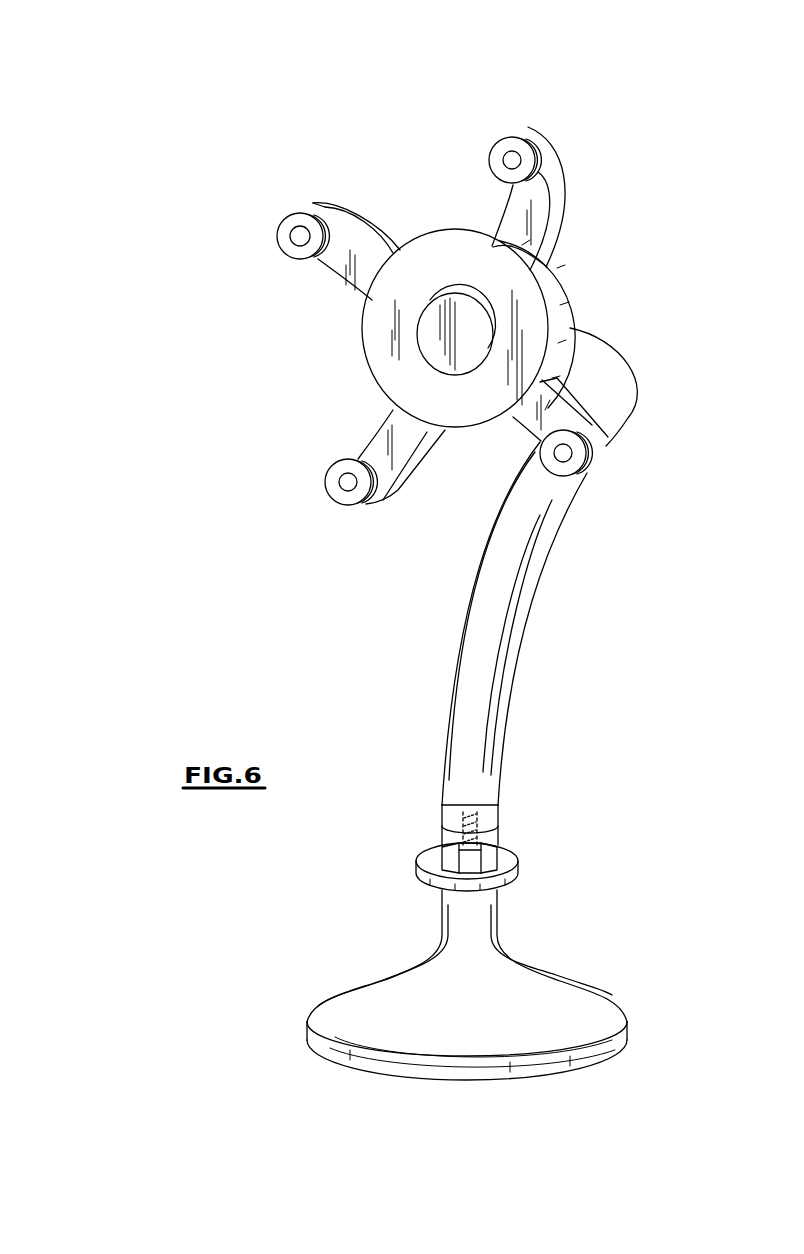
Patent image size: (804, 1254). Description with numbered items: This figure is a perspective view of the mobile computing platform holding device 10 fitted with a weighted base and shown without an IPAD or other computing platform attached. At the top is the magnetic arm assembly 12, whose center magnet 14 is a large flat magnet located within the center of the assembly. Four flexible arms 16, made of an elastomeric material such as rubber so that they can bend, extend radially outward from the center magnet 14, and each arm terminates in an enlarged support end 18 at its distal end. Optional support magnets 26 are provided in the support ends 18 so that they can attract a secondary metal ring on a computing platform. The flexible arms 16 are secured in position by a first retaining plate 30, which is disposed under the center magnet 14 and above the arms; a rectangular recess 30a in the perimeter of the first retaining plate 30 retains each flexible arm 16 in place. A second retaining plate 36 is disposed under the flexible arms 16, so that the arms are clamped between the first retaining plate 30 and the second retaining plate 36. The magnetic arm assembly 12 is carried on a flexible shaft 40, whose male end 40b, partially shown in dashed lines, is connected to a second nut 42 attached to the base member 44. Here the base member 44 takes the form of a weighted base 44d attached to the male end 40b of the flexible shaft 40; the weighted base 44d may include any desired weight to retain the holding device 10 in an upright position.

The mobile computing platform holding device 10 is at (150, 140).
The magnetic arm assembly 12 is at (318, 370).
The center magnet 14 is at (430, 328).
The flexible arms 16 is at (366, 248).
The support end 18 is at (305, 214).
The support magnets 26 is at (300, 236).
The first retaining plate 30 is at (524, 358).
The rectangular recess 30a is at (542, 266).
The second retaining plate 36 is at (566, 300).
The flexible shaft 40 is at (487, 646).
The male end 40b is at (492, 820).
The second nut 42 is at (450, 857).
The base member 44 is at (516, 857).
The weighted base 44d is at (594, 1026).